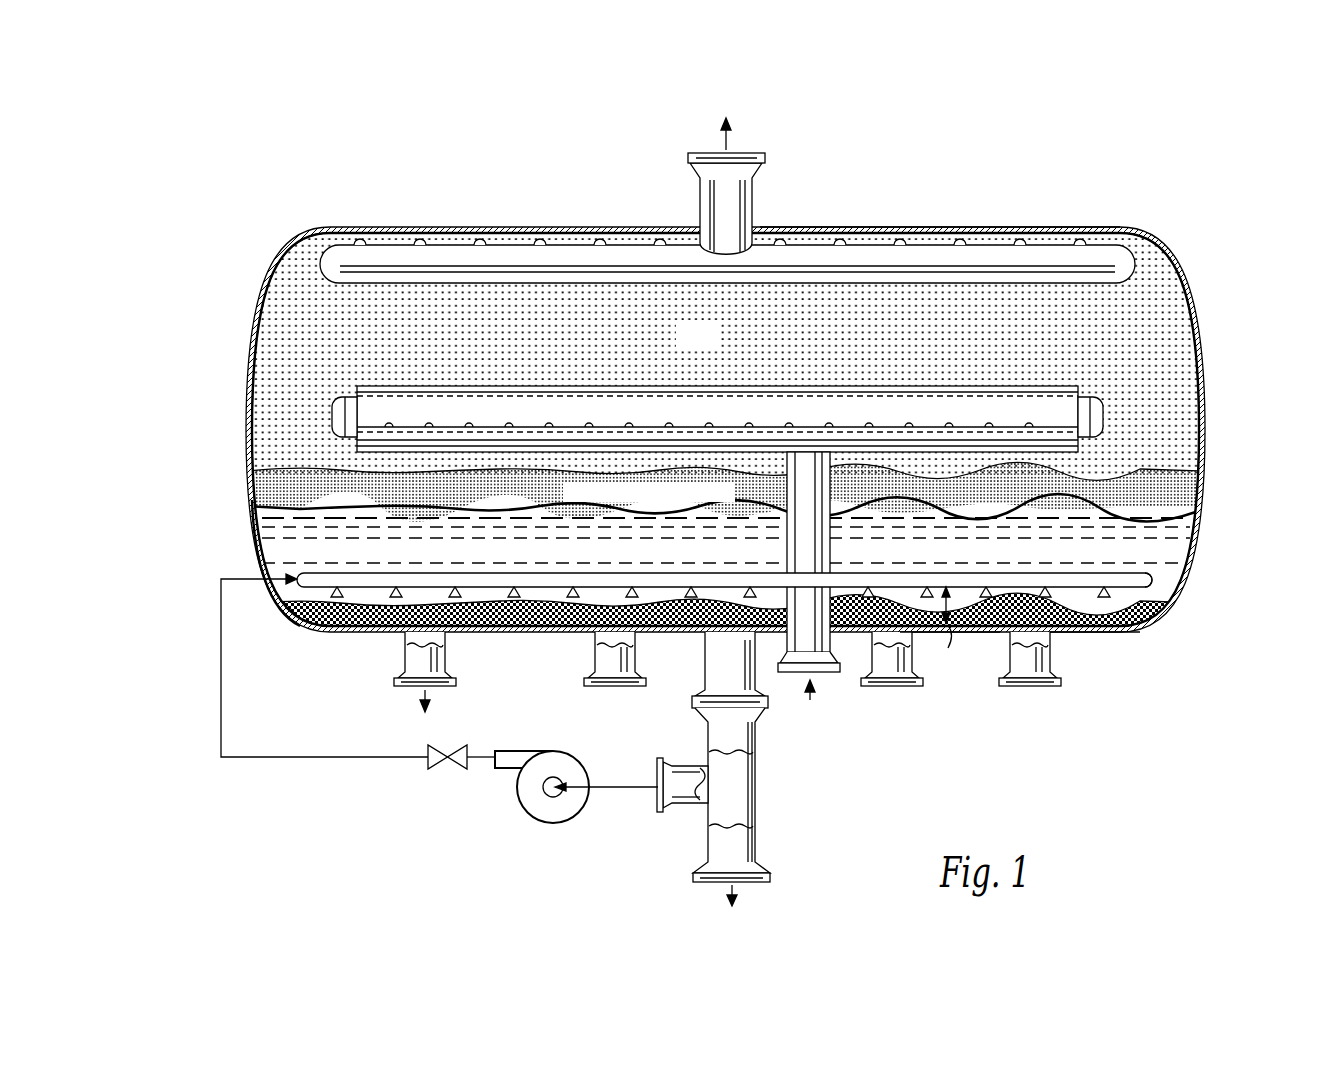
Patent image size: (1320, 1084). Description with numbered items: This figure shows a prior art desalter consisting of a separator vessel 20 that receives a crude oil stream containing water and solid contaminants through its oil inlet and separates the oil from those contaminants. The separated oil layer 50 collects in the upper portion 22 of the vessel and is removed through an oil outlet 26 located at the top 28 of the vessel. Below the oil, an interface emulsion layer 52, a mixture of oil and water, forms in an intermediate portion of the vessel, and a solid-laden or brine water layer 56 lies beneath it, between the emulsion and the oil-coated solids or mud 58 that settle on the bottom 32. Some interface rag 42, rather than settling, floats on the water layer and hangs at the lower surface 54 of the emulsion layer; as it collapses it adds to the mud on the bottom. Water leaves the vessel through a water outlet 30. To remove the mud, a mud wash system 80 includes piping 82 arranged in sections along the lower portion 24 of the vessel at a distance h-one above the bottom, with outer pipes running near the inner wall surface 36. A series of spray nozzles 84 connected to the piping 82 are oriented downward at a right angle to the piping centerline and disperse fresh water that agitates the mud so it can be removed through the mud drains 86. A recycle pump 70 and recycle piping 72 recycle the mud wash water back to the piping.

The separator vessel 20 is at (422, 217).
The upper portion of vessel 22 is at (272, 290).
The lower portion of vessel 24 is at (262, 556).
The oil outlet 26 is at (700, 190).
The top of vessel 28 is at (805, 228).
The water outlet 30 is at (702, 666).
The bottom of vessel 32 is at (977, 634).
The inner wall surface of vessel 36 is at (528, 634).
The interface rag 42 is at (1127, 553).
The oil layer 50 is at (1118, 310).
The interface emulsion layer 52 is at (1180, 482).
The lower surface of interface emulsion layer 54 is at (272, 497).
The water layer 56 is at (1155, 579).
The oil-coated solids/mud 58 is at (1105, 632).
The recycle pump 70 is at (528, 800).
The recycle piping 72 is at (220, 674).
The mud wash system 80 is at (306, 561).
The piping 82 is at (363, 582).
The spray nozzle 84 is at (332, 592).
The mud drain 86 is at (447, 657).